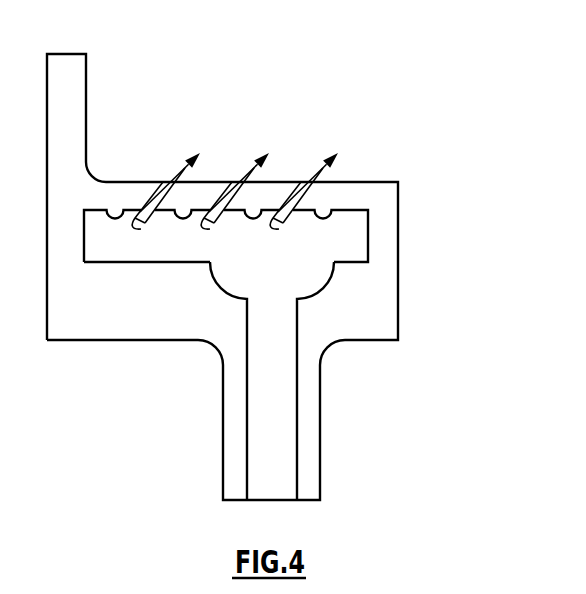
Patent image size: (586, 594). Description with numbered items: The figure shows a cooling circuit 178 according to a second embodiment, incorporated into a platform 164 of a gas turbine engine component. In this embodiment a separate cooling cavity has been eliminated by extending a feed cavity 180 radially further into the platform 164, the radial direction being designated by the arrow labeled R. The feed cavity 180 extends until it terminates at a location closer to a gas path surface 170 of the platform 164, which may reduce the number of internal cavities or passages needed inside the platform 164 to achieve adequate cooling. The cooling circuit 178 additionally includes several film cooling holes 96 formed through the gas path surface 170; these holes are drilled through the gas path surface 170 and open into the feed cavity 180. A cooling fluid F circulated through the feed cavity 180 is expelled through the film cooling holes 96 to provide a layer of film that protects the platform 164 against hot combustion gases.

The film cooling holes 96 is at (156, 186).
The platform 164 is at (398, 266).
The gas path surface 170 is at (113, 182).
The cooling circuit 178 is at (269, 105).
The feed cavity 180 is at (320, 319).
The cooling fluid F is at (199, 166).
The radial direction R is at (478, 396).